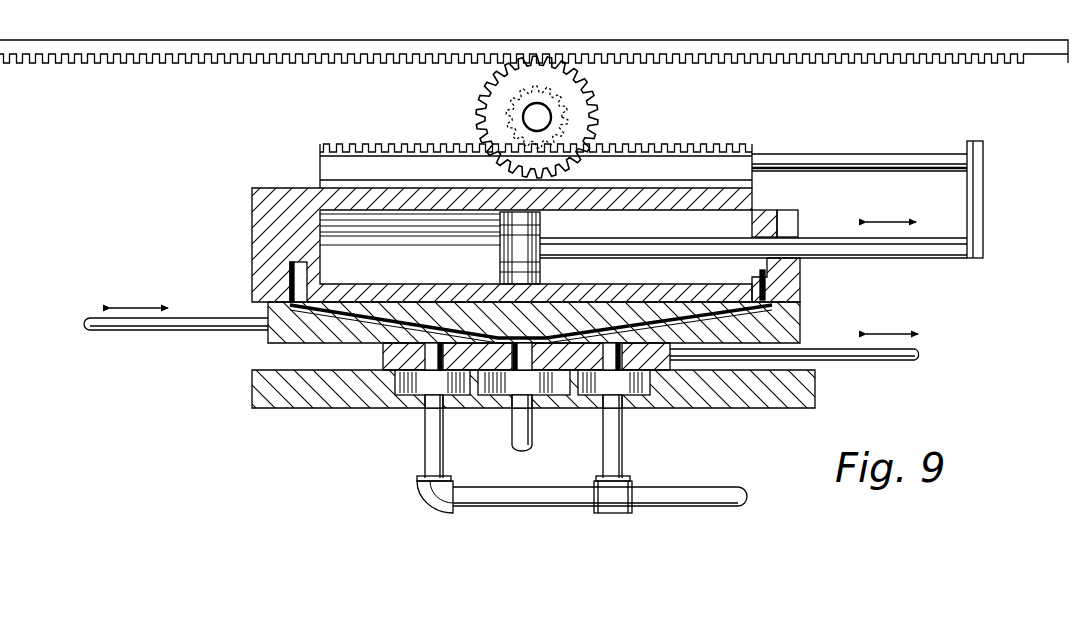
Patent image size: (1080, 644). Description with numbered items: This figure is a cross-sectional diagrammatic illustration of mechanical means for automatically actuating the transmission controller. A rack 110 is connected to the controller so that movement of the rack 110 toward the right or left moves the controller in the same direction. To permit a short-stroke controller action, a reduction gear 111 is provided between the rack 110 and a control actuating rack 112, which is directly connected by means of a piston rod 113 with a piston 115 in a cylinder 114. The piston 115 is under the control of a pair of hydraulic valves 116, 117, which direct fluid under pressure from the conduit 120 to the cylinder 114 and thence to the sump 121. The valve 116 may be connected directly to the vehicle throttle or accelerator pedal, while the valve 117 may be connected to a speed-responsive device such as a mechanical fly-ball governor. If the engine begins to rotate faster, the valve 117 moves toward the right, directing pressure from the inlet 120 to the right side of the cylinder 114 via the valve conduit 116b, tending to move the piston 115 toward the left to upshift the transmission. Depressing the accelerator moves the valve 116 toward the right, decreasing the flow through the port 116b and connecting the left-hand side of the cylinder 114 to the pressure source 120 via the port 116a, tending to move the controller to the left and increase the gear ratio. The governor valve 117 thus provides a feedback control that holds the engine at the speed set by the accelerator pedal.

The rack 110 is at (714, 38).
The reduction gear 111 is at (578, 108).
The control actuating rack 112 is at (672, 143).
The piston rod 113 is at (830, 258).
The cylinder 114 is at (398, 282).
The piston 115 is at (541, 268).
The hydraulic valve 116 is at (282, 313).
The port 116a is at (282, 334).
The valve conduit 116b is at (800, 319).
The hydraulic valve 117 is at (392, 352).
The conduit 120 is at (520, 426).
The sump 121 is at (430, 434).